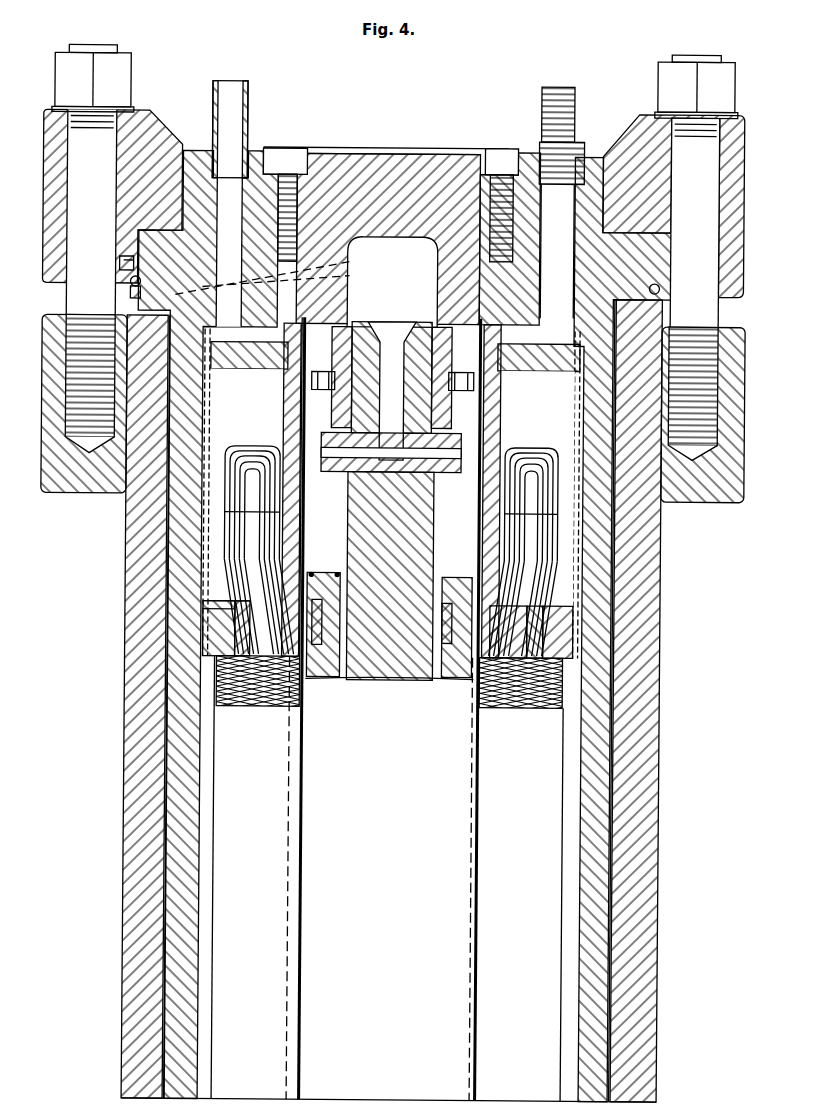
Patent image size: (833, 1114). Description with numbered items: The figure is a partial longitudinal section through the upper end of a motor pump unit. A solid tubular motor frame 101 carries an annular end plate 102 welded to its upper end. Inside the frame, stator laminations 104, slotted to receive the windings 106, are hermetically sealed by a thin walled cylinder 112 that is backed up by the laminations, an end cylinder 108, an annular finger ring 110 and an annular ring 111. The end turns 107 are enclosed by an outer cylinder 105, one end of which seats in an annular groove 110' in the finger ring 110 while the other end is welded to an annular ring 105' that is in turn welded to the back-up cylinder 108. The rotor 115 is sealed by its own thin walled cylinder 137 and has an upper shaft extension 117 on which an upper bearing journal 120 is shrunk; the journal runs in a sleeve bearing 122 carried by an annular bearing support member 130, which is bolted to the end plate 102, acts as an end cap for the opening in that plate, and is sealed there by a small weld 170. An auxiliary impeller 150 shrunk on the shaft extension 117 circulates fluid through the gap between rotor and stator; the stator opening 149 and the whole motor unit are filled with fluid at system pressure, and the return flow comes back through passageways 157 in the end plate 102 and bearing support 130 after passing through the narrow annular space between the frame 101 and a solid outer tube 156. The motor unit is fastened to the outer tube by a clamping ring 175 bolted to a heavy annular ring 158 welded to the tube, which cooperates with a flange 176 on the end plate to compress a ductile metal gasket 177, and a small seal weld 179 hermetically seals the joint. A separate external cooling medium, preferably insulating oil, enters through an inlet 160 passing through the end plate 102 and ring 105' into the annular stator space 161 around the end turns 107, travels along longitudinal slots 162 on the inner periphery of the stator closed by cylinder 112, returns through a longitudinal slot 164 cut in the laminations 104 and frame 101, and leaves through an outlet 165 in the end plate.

The motor frame 101 is at (178, 860).
The annular end plate 102 is at (246, 160).
The stator laminations 104 is at (280, 924).
The outer cylinder 105 is at (391, 488).
The annular ring 105' is at (392, 494).
The windings 106 is at (280, 631).
The end turns 107 is at (248, 448).
The end cylinder 108 is at (290, 568).
The annular finger ring 110 is at (357, 629).
The annular groove 110' is at (210, 594).
The annular ring 111 is at (203, 615).
The thin walled cylinder 112 is at (318, 486).
The rotor 115 is at (411, 752).
The upper shaft extension 117 is at (374, 411).
The upper bearing journal 120 is at (355, 388).
The sleeve bearing 122 is at (355, 362).
The bearing support member 130 is at (340, 151).
The thin walled cylinder 137 is at (333, 622).
The stator opening 149 is at (308, 869).
The auxiliary impeller 150 is at (336, 473).
The outer tube 156 is at (126, 837).
The passageway 157 is at (199, 274).
The heavy annular ring 158 is at (706, 494).
The inlet 160 is at (569, 101).
The annular stator space 161 is at (269, 415).
The longitudinal slot 162 is at (304, 833).
The longitudinal slot 164 is at (206, 792).
The outlet 165 is at (227, 95).
The seal weld 170 is at (527, 156).
The clamping ring 175 is at (178, 145).
The flange 176 is at (165, 231).
The gasket 177 is at (128, 286).
The seal weld 179 is at (117, 268).